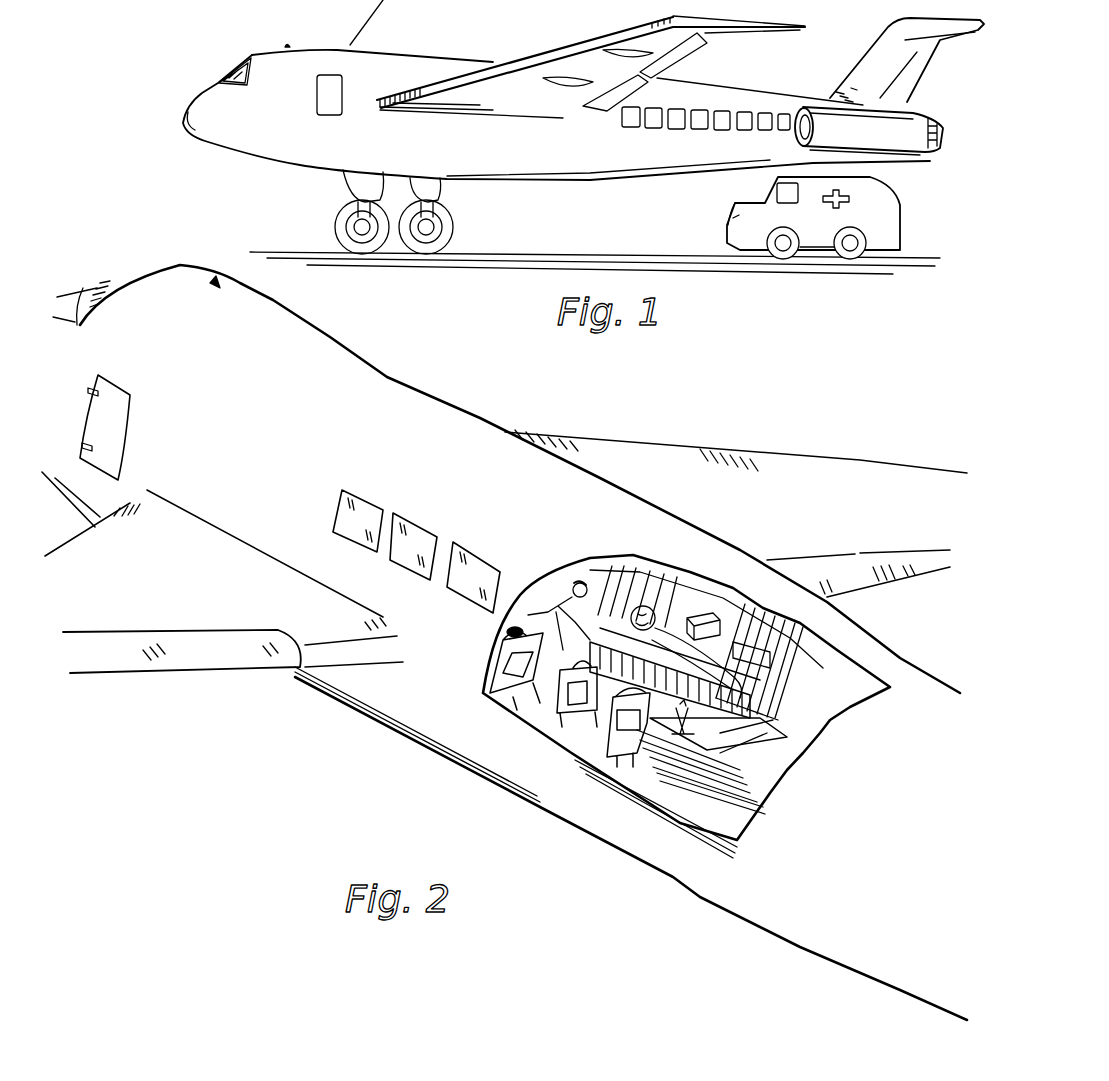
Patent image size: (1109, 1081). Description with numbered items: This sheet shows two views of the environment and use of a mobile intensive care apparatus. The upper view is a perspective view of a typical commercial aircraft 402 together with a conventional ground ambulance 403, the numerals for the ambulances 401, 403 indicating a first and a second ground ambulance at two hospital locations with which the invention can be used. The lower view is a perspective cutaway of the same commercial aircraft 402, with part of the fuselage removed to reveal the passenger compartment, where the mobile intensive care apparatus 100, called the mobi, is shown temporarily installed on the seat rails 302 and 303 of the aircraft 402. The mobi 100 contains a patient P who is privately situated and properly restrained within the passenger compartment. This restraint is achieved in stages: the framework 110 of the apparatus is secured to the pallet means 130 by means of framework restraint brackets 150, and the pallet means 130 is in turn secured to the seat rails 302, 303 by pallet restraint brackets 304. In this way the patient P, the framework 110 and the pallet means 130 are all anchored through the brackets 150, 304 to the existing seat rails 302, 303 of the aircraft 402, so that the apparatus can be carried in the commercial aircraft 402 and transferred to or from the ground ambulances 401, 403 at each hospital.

In FIG. 1, the ground ambulance 401 is at (977, 174).
In FIG. 1, the ground ambulance 403 is at (900, 200).
In FIG. 2, the commercial aircraft 402 is at (420, 384).
In FIG. 2, the framework 110 is at (750, 693).
In FIG. 2, the patient P is at (657, 640).
In FIG. 2, the mobile intensive care apparatus 100 is at (770, 730).
In FIG. 2, the pallet means 130 is at (788, 736).
In FIG. 2, the framework restraint brackets 150 is at (778, 733).
In FIG. 2, the seat rail 302 is at (787, 770).
In FIG. 2, the seat rail 303 is at (780, 790).
In FIG. 2, the pallet restraint brackets 304 is at (770, 800).